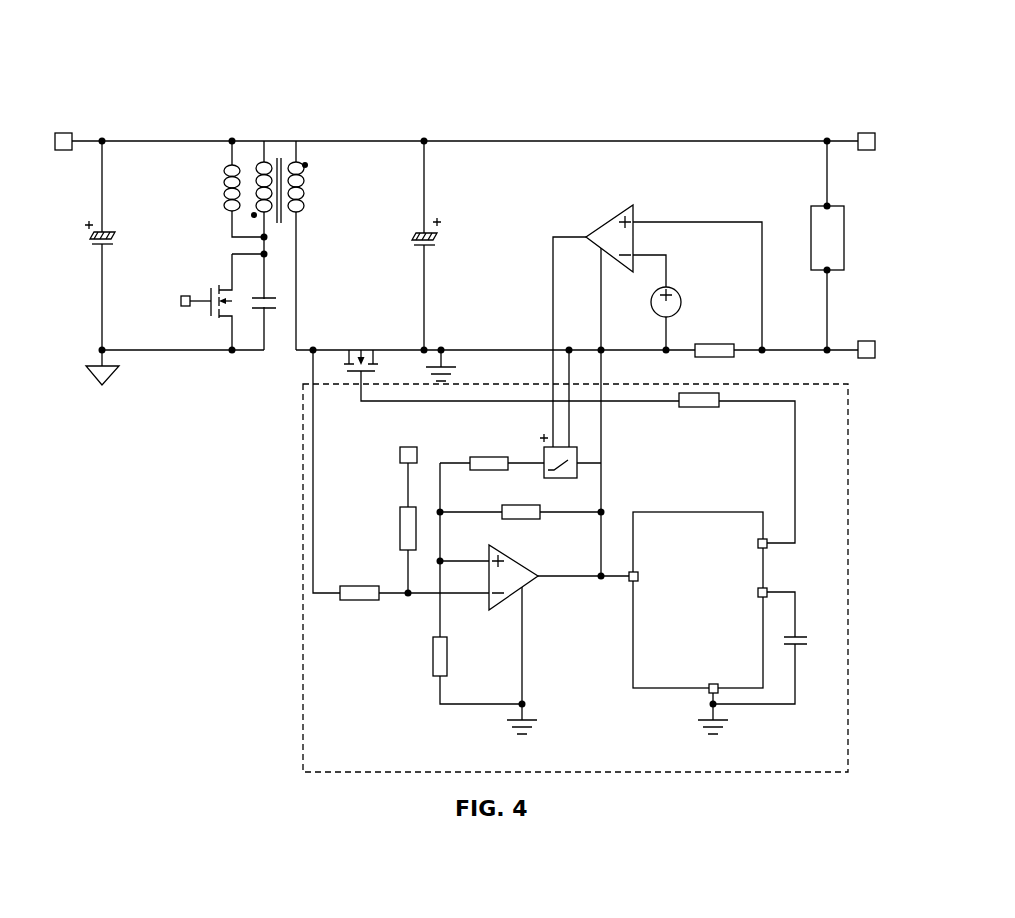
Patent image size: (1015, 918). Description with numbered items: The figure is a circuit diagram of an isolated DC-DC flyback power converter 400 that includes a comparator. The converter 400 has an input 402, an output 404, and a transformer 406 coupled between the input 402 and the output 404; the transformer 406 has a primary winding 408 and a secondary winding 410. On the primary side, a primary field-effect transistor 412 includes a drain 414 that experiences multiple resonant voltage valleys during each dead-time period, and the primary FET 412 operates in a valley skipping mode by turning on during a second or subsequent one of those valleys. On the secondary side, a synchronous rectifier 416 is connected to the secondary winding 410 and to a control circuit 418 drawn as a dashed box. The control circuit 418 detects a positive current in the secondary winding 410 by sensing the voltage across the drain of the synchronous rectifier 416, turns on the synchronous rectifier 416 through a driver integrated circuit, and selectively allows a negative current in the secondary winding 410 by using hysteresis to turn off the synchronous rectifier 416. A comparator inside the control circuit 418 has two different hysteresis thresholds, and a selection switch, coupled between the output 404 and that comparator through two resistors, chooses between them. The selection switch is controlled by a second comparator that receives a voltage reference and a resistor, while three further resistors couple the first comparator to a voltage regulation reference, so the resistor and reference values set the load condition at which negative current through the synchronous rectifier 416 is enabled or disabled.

The isolated DC-DC flyback power converter 400 is at (937, 80).
The input 402 is at (64, 133).
The output 404 is at (870, 133).
The transformer 406 is at (284, 148).
The primary winding 408 is at (221, 165).
The secondary winding 410 is at (311, 188).
The primary field-effect transistor 412 is at (212, 325).
The drain 414 is at (231, 272).
The synchronous rectifier 416 is at (359, 345).
The control circuit 418 is at (302, 550).